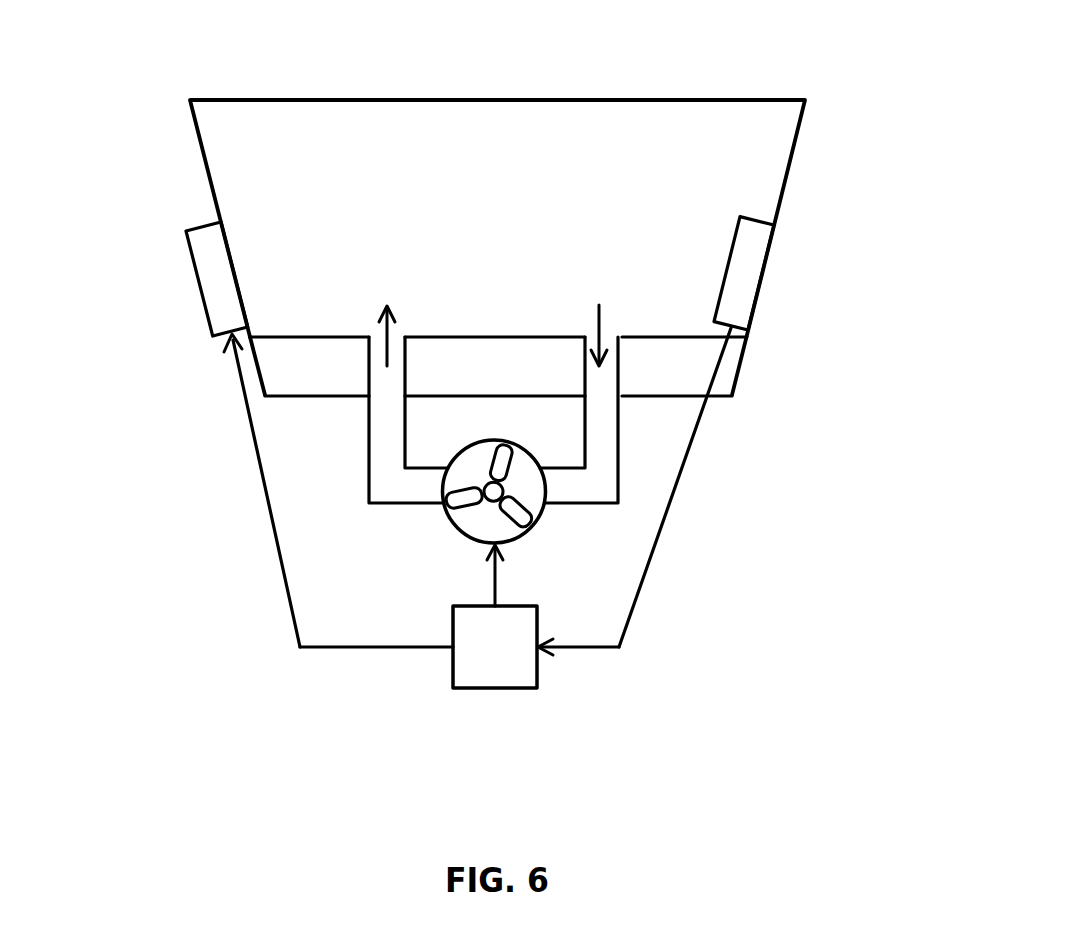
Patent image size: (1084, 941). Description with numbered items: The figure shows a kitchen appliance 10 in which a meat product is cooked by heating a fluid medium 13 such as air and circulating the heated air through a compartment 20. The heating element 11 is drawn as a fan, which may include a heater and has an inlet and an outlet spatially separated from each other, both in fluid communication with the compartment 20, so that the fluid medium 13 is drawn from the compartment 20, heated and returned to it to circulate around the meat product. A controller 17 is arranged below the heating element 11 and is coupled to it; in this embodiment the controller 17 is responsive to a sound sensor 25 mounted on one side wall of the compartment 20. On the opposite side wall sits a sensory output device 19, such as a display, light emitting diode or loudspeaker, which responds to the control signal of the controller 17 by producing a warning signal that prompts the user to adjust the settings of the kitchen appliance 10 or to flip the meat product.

The kitchen appliance 10 is at (788, 168).
The compartment 20 is at (628, 140).
The fluid medium 13 is at (493, 388).
The sensory output device 19 is at (207, 298).
The sound sensor 25 is at (743, 267).
The heating element 11 is at (455, 528).
The controller 17 is at (499, 667).